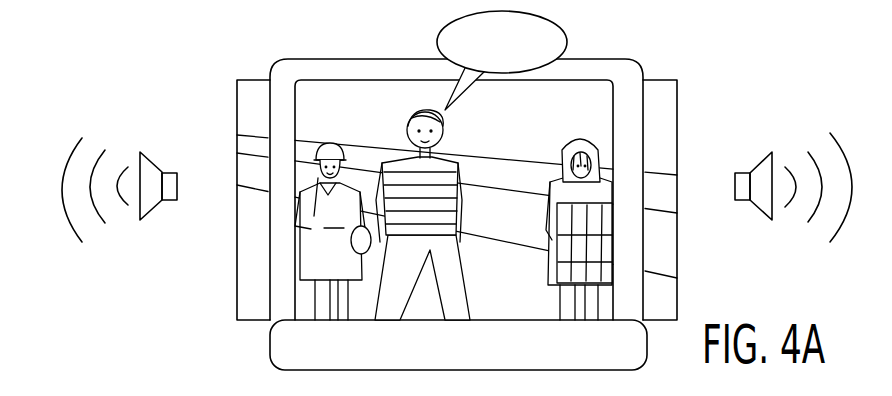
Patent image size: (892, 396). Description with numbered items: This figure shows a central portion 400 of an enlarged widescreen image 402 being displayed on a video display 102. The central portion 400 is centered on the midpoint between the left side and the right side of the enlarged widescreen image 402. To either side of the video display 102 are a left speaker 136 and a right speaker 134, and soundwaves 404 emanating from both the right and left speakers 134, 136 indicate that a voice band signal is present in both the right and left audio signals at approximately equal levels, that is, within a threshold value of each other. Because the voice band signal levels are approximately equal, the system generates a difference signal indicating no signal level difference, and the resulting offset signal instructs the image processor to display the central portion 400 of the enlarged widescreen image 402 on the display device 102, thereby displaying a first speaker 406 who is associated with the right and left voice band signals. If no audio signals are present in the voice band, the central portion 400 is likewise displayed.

The video display 102 is at (642, 60).
The right speaker 134 is at (777, 155).
The left speaker 136 is at (155, 160).
The central portion 400 is at (348, 140).
The enlarged widescreen image 402 is at (678, 88).
The soundwaves 404 is at (80, 137).
The first speaker 406 is at (422, 110).